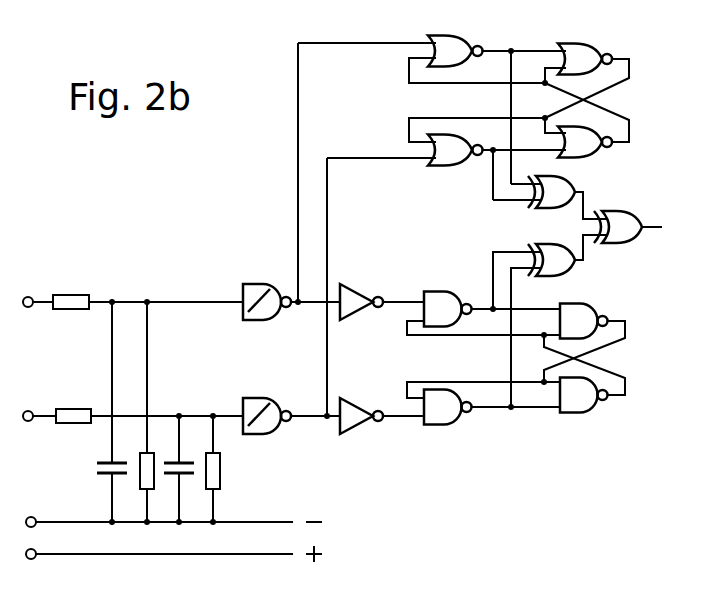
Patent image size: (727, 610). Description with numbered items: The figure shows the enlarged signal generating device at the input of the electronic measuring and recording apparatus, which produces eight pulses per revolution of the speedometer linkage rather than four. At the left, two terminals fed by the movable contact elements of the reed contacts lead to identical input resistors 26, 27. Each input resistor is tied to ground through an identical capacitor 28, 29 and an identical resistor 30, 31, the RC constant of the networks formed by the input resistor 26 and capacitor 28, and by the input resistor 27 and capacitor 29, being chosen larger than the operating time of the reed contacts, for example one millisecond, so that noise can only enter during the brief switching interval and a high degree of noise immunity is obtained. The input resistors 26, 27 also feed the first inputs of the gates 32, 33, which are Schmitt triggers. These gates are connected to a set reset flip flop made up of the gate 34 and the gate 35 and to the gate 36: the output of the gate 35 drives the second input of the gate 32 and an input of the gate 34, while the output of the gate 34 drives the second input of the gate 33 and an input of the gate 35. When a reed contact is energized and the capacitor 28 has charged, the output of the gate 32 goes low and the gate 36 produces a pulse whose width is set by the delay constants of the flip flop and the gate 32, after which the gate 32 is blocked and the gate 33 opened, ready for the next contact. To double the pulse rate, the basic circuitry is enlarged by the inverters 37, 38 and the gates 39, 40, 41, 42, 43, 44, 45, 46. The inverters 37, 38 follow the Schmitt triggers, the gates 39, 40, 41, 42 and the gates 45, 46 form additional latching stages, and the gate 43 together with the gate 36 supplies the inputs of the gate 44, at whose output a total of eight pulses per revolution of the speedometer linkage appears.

The input resistor 26 is at (62, 296).
The input resistor 27 is at (58, 410).
The capacitor 28 is at (104, 479).
The capacitor 29 is at (171, 478).
The resistor 30 is at (139, 486).
The resistor 31 is at (220, 483).
The gate 32 is at (262, 283).
The gate 33 is at (265, 380).
The gate 34 is at (584, 303).
The gate 35 is at (572, 412).
The gate 36 is at (574, 265).
The inverter 37 is at (356, 292).
The inverter 38 is at (352, 428).
The gate 39 is at (458, 36).
The gate 40 is at (451, 165).
The gate 41 is at (589, 45).
The gate 42 is at (595, 156).
The gate 43 is at (540, 210).
The gate 44 is at (618, 212).
The gate 45 is at (446, 293).
The gate 46 is at (441, 428).